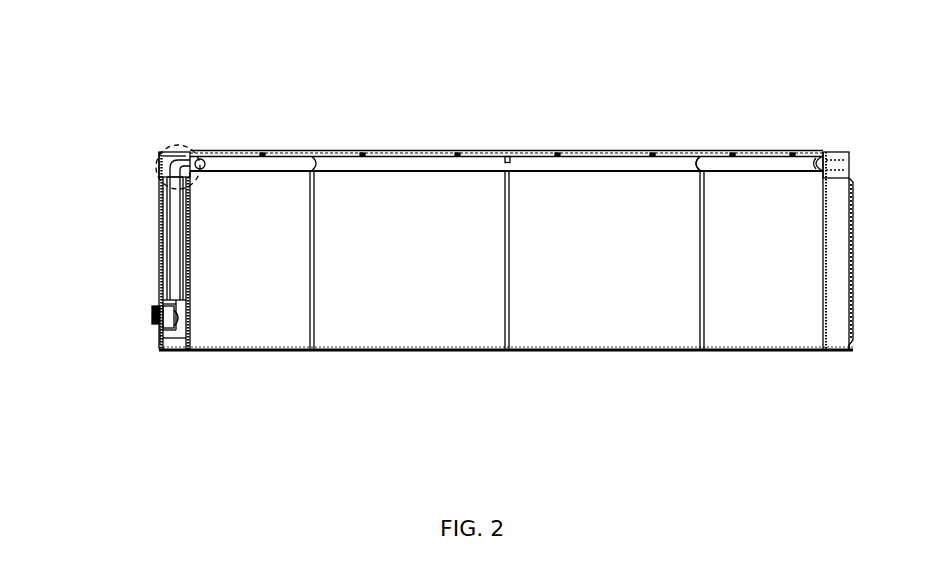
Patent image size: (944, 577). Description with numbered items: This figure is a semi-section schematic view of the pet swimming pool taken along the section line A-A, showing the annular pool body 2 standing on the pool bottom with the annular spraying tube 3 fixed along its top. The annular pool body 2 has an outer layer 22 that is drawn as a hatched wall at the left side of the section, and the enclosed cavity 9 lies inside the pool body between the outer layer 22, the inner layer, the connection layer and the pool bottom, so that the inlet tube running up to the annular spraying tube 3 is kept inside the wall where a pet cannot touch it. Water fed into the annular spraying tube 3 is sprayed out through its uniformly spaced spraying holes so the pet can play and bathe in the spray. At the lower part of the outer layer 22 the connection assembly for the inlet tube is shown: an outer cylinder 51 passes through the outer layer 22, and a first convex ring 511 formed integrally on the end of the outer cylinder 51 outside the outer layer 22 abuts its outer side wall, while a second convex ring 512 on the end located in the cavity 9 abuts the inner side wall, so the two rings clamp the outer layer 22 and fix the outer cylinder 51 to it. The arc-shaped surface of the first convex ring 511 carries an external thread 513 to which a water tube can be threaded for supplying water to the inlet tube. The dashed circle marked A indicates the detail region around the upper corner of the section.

The annular pool body 2 is at (600, 292).
The annular spraying tube 3 is at (603, 166).
The outer layer 22 is at (160, 237).
The section line A- A is at (178, 145).
The first convex ring 511 is at (160, 302).
The outer cylinder 51 is at (151, 315).
The second convex ring 512 is at (153, 326).
The external thread 513 is at (152, 328).
The cavity 9 is at (178, 338).